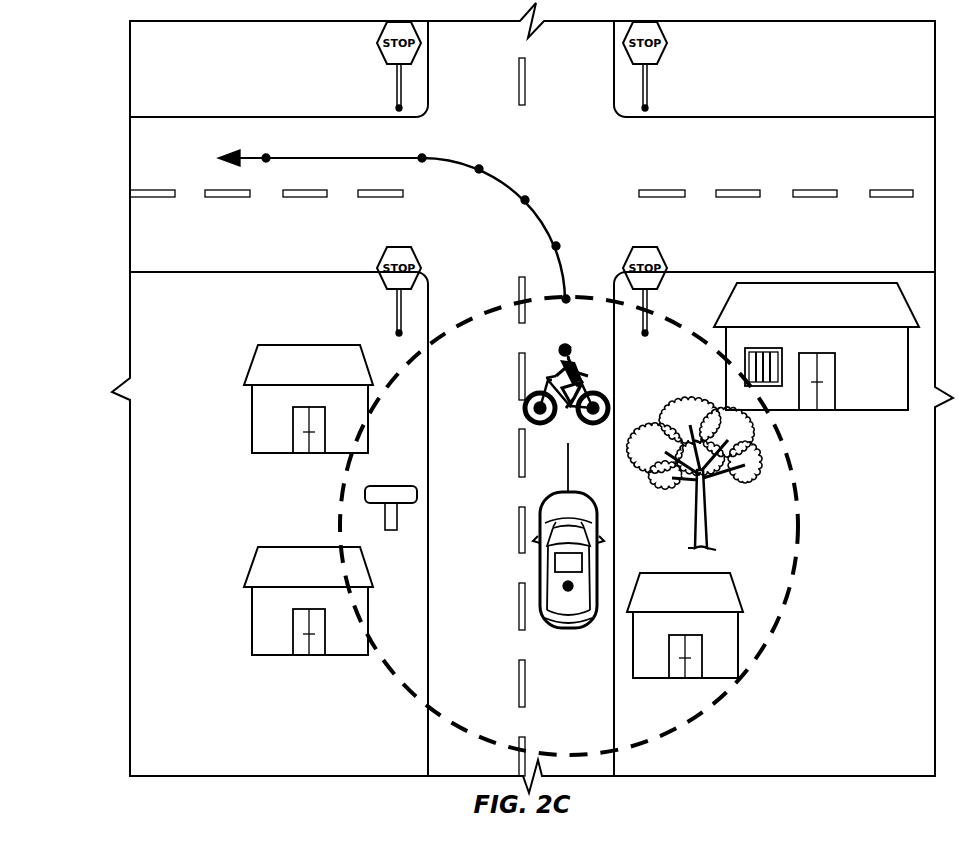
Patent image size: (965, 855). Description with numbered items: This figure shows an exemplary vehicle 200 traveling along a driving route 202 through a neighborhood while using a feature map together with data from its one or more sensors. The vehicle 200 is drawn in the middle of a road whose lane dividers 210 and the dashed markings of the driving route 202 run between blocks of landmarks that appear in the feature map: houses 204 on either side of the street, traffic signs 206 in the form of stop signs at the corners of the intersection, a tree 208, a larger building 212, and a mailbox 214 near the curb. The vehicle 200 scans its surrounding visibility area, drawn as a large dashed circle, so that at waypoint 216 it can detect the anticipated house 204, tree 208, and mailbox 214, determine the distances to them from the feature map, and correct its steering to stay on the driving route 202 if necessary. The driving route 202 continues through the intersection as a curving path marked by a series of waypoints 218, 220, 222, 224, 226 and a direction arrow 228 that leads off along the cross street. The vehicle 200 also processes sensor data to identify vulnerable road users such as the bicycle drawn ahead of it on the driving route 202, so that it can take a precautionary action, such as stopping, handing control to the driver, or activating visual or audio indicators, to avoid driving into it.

The vehicle 200 is at (534, 568).
The driving route 202 is at (503, 412).
The house 204 is at (300, 345).
The traffic signs 206 is at (416, 28).
The tree 208 is at (705, 518).
The lane dividers 210 is at (817, 190).
The building 212 is at (762, 283).
The mailbox 214 is at (417, 494).
The waypoint 216 is at (562, 585).
The trajectory start point 218 is at (568, 297).
The trajectory waypoint 220 is at (554, 246).
The trajectory waypoint 222 is at (525, 198).
The trajectory waypoint 224 is at (479, 167).
The trajectory waypoint 226 is at (422, 156).
The trajectory path 228 is at (266, 160).